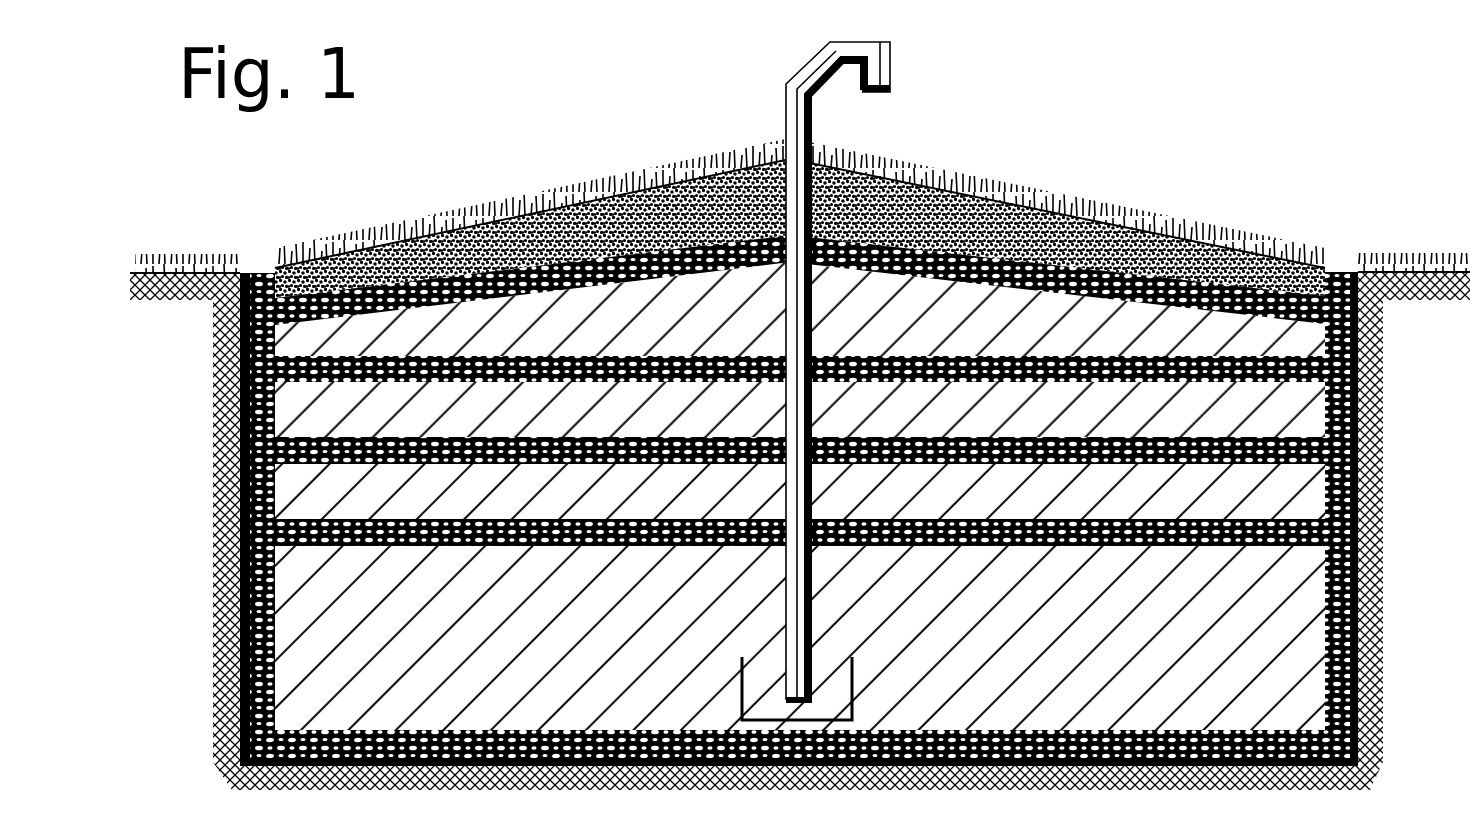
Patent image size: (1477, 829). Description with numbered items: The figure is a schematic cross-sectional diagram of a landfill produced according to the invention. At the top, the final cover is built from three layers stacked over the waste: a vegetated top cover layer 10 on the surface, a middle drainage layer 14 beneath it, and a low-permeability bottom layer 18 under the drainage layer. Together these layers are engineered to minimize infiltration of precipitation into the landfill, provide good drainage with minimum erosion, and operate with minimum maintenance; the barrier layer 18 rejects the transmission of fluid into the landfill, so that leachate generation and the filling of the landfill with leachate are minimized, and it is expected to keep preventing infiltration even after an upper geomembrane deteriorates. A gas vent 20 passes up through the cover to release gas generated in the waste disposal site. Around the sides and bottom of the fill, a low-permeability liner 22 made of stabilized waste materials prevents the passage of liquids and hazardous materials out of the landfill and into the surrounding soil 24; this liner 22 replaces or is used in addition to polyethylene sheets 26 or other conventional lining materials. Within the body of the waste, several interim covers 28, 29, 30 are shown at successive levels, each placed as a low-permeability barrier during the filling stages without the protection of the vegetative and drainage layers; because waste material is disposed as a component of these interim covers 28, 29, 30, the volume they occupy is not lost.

The vegetated top cover layer 10 is at (1010, 177).
The middle drainage layer 14 is at (625, 222).
The low-permeability bottom layer 18 is at (472, 297).
The gas vent 20 is at (813, 73).
The low-permeability liner 22 is at (230, 487).
The surrounding soil 24 is at (226, 596).
The polyethylene sheets 26 is at (222, 362).
The interim cover 28 is at (1292, 541).
The interim cover 29 is at (1292, 468).
The interim cover 30 is at (1292, 393).